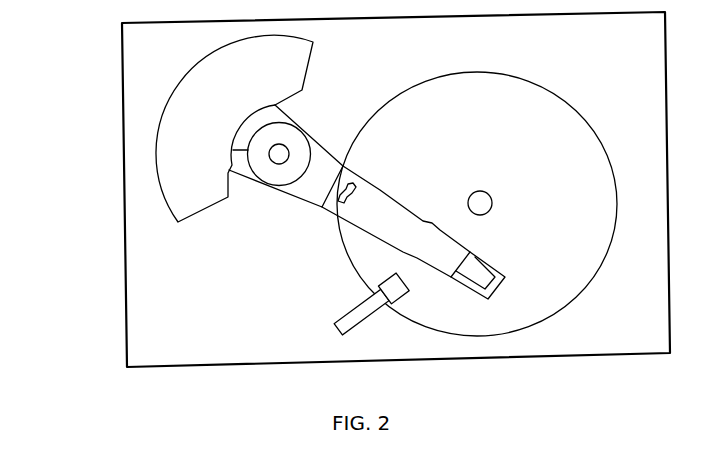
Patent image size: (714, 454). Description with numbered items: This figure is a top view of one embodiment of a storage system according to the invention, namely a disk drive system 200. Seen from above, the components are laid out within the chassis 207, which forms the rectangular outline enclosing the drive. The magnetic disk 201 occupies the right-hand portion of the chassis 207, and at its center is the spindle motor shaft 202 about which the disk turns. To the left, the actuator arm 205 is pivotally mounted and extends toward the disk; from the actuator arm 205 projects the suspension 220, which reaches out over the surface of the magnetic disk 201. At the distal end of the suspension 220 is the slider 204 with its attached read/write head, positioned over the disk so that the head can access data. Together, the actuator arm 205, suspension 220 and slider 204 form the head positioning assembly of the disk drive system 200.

The disk drive system 200 is at (107, 158).
The magnetic disk 201 is at (477, 204).
The spindle motor shaft 202 is at (472, 196).
The slider 204 is at (494, 288).
The actuator arm 205 is at (316, 171).
The chassis 207 is at (396, 189).
The suspension 220 is at (370, 204).